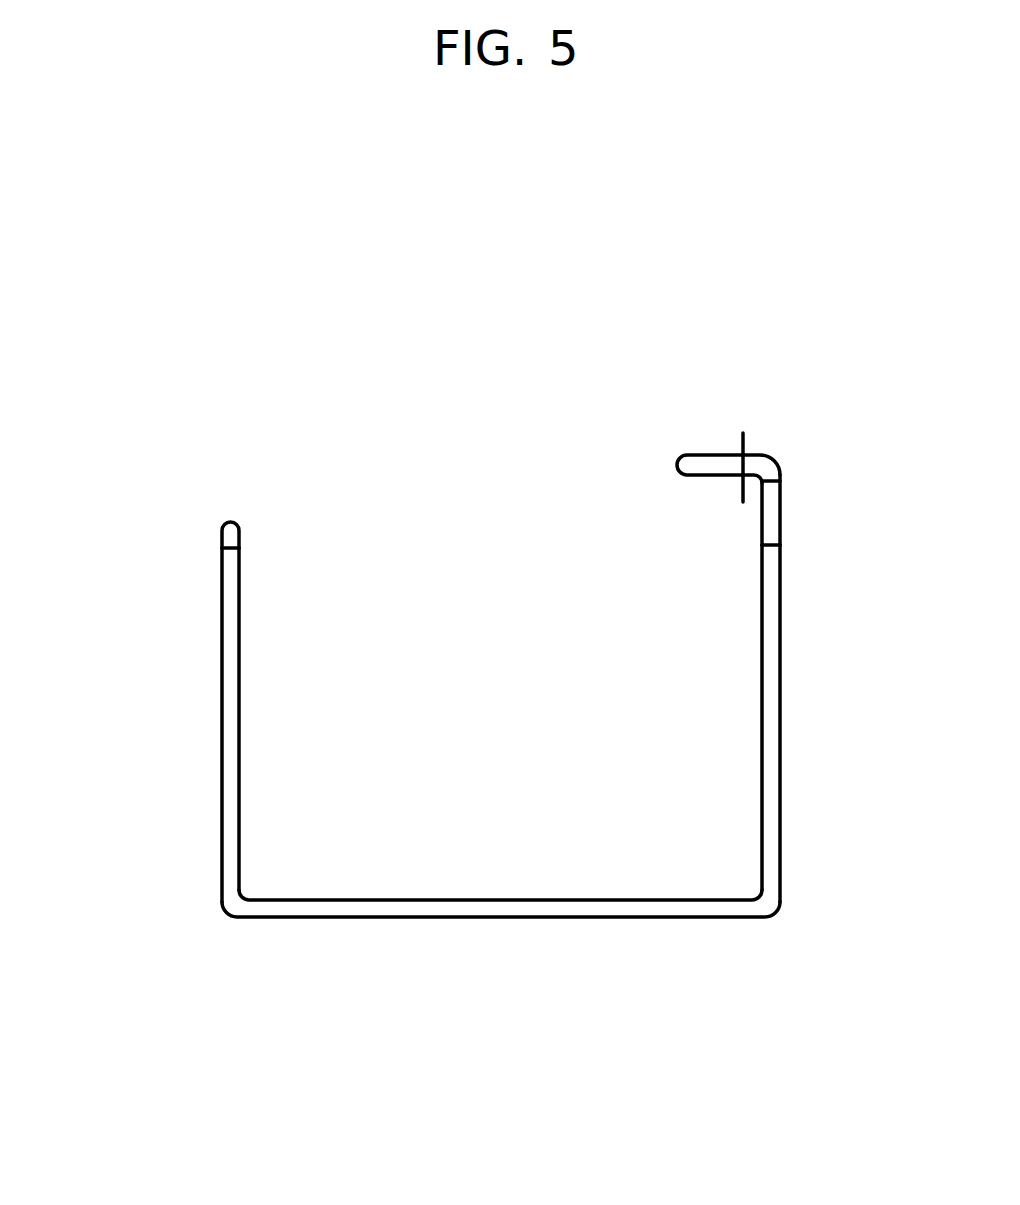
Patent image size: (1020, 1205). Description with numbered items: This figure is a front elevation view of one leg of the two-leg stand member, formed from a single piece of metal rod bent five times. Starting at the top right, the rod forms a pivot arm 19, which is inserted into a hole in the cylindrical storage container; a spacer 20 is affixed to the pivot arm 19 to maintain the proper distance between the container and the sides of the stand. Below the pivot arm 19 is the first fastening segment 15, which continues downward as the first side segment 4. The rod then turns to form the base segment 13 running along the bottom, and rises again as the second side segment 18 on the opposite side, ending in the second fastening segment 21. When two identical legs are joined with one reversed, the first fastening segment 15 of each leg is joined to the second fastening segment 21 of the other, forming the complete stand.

The first side segment 4 is at (780, 705).
The base segment 13 is at (493, 918).
The first fastening segment 15 is at (782, 498).
The second side segment 18 is at (222, 720).
The pivot arm 19 is at (710, 452).
The spacer 20 is at (743, 437).
The second fastening segment 21 is at (222, 537).